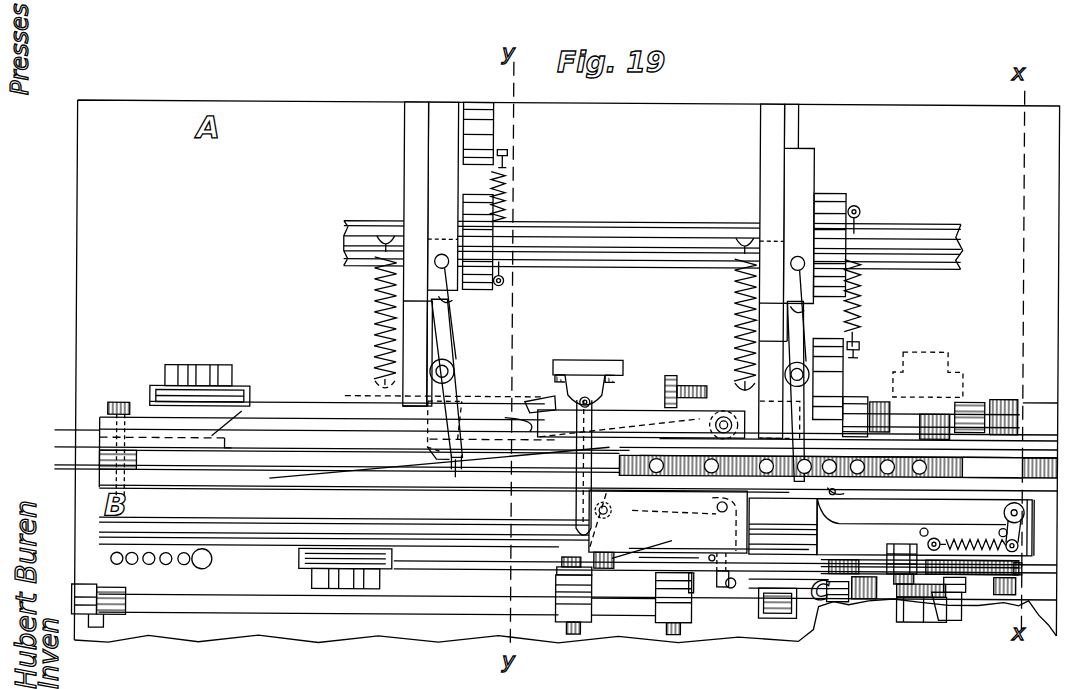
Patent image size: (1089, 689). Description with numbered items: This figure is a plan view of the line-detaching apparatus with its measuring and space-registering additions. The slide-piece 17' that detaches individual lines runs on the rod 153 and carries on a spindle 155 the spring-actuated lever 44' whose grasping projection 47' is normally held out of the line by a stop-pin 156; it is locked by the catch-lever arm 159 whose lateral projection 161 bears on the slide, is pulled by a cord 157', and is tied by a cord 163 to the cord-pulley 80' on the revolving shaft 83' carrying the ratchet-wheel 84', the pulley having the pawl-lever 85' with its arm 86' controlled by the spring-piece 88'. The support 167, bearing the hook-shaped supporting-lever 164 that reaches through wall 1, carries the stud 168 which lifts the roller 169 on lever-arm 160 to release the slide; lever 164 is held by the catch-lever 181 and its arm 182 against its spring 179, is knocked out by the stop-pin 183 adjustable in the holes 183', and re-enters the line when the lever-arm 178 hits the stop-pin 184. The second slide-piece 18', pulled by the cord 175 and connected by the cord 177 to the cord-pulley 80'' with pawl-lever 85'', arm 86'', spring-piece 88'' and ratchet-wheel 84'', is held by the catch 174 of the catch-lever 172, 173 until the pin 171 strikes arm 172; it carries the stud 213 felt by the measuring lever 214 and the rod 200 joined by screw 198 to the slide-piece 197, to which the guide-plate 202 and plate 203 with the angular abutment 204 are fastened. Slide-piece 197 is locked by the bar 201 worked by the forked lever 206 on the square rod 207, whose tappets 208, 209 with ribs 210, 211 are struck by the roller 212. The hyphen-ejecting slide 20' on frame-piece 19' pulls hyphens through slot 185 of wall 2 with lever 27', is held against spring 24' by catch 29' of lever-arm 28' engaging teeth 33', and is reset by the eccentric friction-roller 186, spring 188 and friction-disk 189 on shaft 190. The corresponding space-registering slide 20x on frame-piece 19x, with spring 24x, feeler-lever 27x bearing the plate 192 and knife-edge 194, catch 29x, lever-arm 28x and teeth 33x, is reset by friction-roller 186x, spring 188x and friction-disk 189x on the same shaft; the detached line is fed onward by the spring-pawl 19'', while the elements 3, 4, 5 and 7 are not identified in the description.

The frame-piece 19x is at (410, 125).
The spring-actuated slide 20x is at (430, 146).
The friction-roller 186x is at (478, 142).
The spring 188x is at (506, 182).
The friction-disk 189x is at (478, 220).
The revolving shaft 190 is at (920, 215).
The frame-piece 19' is at (751, 271).
The spring-actuated slide 20' is at (766, 204).
The friction-disk 189 is at (848, 200).
The spring 24x is at (378, 288).
The catch 29x is at (452, 300).
The catch-lever arm 28x is at (448, 343).
The teeth 33x is at (420, 350).
The cord 175 is at (345, 404).
The feeler-lever 27x is at (455, 430).
The catch-lever arm 173 is at (543, 403).
The catch 174 is at (525, 418).
The slide-piece 18' is at (641, 399).
The stud 213 is at (672, 374).
The measuring lever 214 is at (695, 386).
The spring 24' is at (731, 325).
The tooth 33' is at (774, 299).
The catch 29' is at (782, 316).
The lever-arm 28' is at (784, 368).
The lever 27' is at (780, 419).
The spring 188 is at (862, 310).
The friction-roller 186 is at (840, 358).
The revolving shaft 83' is at (927, 482).
The ratchet-wheel 84'' is at (932, 392).
The pawl-lever arm 86'' is at (861, 403).
The pawl-lever 85'' is at (890, 400).
The spring-piece 88'' is at (975, 402).
The cord-pulley 80'' is at (1010, 404).
The cord 177 is at (1042, 406).
The guide-plate 202 is at (152, 410).
The screw 198 is at (115, 420).
The plate 203 is at (237, 415).
The angular abutment 204 is at (228, 448).
The rod 200 is at (278, 430).
The bar 4 is at (270, 465).
The bar 5 is at (316, 462).
The bar 3 is at (360, 464).
The knife-edge 194 is at (438, 447).
The projecting plate 192 is at (452, 472).
The spring-pawl 19'' is at (439, 468).
The slide-piece 197 is at (112, 472).
The slot 185 is at (805, 450).
The channel-wall 2 is at (848, 449).
The wall 1 is at (930, 485).
The block 7 is at (990, 468).
The stop-pin 156 is at (852, 487).
The supporting-lever 164 is at (630, 480).
The catch-lever arm 172 is at (578, 510).
The catch-lever 181 is at (668, 521).
The catch-lever arm 182 is at (606, 553).
The stud 168 is at (649, 542).
The support 167 is at (681, 542).
The grasping projection 47' is at (783, 523).
The spring-actuated lever 44' is at (924, 526).
The slide-piece 17' is at (927, 527).
The spindle 155 is at (1005, 510).
The pin 171 is at (921, 530).
The lateral projection 161 is at (885, 558).
The rod 153 is at (285, 512).
The bar 201 is at (120, 568).
The set of holes 183' is at (155, 570).
The stop-pin 183 is at (199, 569).
The square rod 207 is at (270, 590).
The cord 157' is at (329, 585).
The roller 169 is at (562, 558).
The spring 179 is at (710, 557).
The lever-arm 178 is at (808, 572).
The catch-lever arm 159 is at (725, 558).
The inclined rib 210 is at (558, 573).
The tappet 208 is at (570, 590).
The catch-lever arm 160 is at (624, 594).
The tappet 209 is at (670, 598).
The inclined rib 211 is at (712, 585).
The stop-pin 184 is at (732, 590).
The forked lever 206 is at (105, 620).
The cord 163 is at (1022, 562).
The pawl-lever arm 86' is at (810, 601).
The pawl-lever 85' is at (874, 599).
The roller 212 is at (903, 600).
The ratchet-wheel 84' is at (957, 619).
The spring-piece 88' is at (970, 599).
The cord-pulley 80' is at (1010, 598).